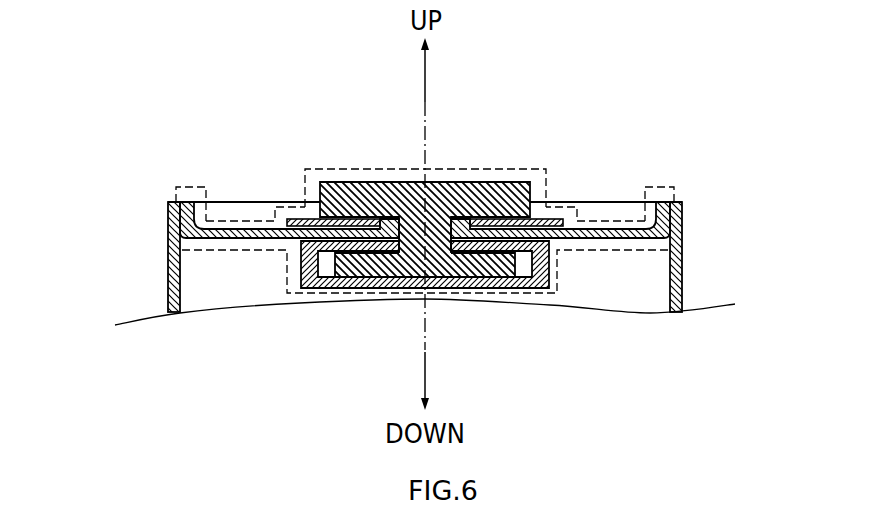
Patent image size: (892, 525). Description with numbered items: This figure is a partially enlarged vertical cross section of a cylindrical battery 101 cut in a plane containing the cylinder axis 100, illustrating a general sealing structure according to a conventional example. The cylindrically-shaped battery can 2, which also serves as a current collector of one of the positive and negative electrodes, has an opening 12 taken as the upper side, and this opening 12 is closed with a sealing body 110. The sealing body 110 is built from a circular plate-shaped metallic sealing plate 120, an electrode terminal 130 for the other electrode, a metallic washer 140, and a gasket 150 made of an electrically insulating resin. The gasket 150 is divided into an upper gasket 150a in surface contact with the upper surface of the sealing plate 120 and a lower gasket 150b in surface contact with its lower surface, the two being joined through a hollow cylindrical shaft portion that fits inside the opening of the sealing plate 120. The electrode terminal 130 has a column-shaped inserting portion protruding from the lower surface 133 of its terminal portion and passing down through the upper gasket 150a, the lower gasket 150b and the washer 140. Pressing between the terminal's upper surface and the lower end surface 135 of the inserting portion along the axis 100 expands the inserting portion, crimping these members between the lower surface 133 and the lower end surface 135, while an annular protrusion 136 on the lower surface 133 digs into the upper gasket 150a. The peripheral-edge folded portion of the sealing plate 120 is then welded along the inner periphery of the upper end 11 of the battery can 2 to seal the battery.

The battery can 2 is at (680, 274).
The upper end of the battery can 11 is at (168, 195).
The opening of the battery can 12 is at (568, 206).
The cylinder axis 100 is at (424, 120).
The cylindrical battery 101 is at (553, 107).
The sealing body 110 is at (319, 168).
The sealing plate 120 is at (607, 230).
The electrode terminal 130 is at (494, 182).
The lower surface of the terminal portion 133 is at (373, 226).
The lower end surface of the inserting portion 135 is at (445, 286).
The protrusion 136 is at (505, 229).
The washer 140 is at (503, 277).
The gasket 150 is at (379, 310).
The upper gasket 150a is at (287, 228).
The lower gasket 150b is at (301, 288).